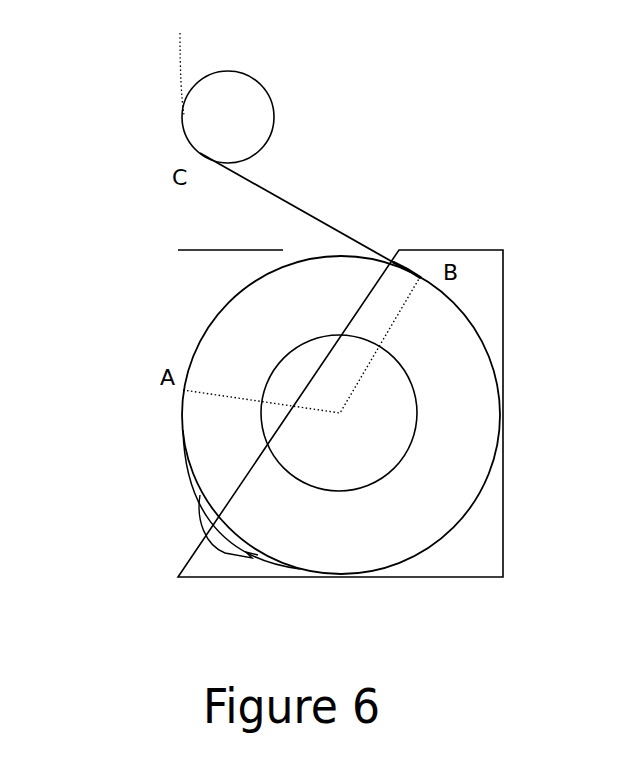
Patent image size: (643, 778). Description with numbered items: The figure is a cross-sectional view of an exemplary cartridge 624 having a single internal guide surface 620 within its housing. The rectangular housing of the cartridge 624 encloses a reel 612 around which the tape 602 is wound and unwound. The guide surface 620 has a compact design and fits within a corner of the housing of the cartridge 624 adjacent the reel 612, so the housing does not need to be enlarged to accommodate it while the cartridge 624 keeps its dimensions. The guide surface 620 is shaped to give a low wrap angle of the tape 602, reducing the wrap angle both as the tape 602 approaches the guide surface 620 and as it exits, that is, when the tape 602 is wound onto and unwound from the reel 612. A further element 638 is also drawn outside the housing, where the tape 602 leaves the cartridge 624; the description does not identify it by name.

The tape 602 is at (190, 485).
The reel 612 is at (407, 452).
The guide surface 620 is at (210, 547).
The cartridge 624 is at (504, 373).
The roller 638 is at (248, 124).